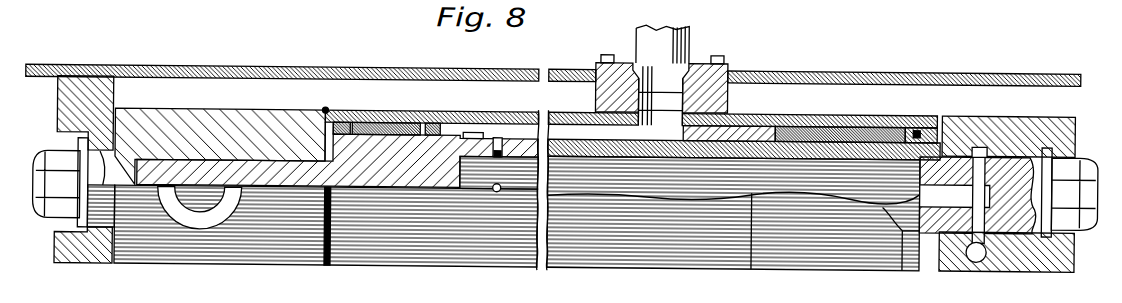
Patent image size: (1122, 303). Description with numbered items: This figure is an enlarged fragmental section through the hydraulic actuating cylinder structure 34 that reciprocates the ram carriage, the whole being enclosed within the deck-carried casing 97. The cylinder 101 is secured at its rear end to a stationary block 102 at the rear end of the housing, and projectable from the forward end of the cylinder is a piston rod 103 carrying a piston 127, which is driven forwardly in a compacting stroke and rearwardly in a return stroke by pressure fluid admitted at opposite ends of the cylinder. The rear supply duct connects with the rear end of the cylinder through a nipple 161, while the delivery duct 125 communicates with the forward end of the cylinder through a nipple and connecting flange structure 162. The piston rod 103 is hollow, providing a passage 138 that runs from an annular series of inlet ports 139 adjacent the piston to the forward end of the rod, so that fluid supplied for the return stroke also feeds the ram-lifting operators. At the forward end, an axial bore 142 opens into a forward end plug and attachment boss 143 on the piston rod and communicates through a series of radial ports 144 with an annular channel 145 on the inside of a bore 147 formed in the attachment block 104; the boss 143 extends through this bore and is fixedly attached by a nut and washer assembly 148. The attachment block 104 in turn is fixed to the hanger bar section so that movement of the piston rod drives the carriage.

The casing 97 is at (200, 63).
The stationary block 102 is at (90, 253).
The hydraulic actuating cylinder structure 34 is at (258, 260).
The nipple 161 is at (180, 208).
The piston 127 is at (375, 146).
The inlet ports 139 is at (497, 133).
The cylinder 101 is at (562, 262).
The piston rod 103 is at (575, 135).
The passage 138 is at (792, 160).
The nipple and connecting flange structure 162 is at (727, 61).
The delivery duct 125 is at (688, 27).
The bore 147 is at (1005, 140).
The forward end plug and attachment boss 143 is at (1013, 207).
The axial bore 142 is at (933, 189).
The radial ports 144 is at (965, 212).
The attachment block 104 is at (1027, 263).
The annular channel 145 is at (974, 252).
The nut and washer assembly 148 is at (1073, 152).